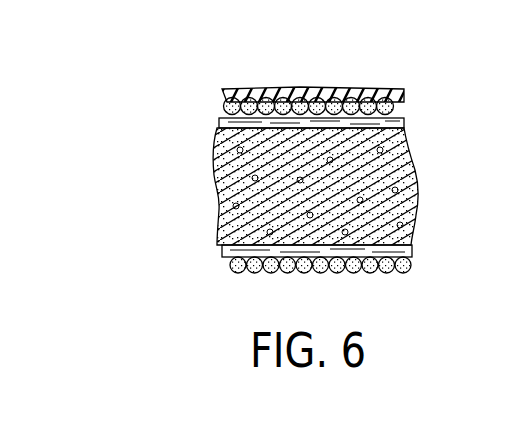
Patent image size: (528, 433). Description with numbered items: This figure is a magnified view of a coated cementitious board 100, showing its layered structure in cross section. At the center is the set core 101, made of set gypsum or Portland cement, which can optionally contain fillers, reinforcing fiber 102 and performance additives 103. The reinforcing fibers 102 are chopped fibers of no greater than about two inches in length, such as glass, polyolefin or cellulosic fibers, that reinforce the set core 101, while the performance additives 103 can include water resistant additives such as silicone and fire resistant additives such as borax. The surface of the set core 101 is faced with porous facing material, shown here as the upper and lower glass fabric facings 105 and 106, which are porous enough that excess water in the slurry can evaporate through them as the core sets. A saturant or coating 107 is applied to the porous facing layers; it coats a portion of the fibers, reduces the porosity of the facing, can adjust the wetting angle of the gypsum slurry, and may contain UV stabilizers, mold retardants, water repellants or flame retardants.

The cementitious board 100 is at (303, 82).
The set core 101 is at (418, 227).
The reinforcing fiber 102 is at (400, 132).
The performance additives 103 is at (222, 184).
The upper glass fabric facing 105 is at (401, 273).
The lower glass fabric facing 106 is at (226, 110).
The saturant or coating 107 is at (400, 102).